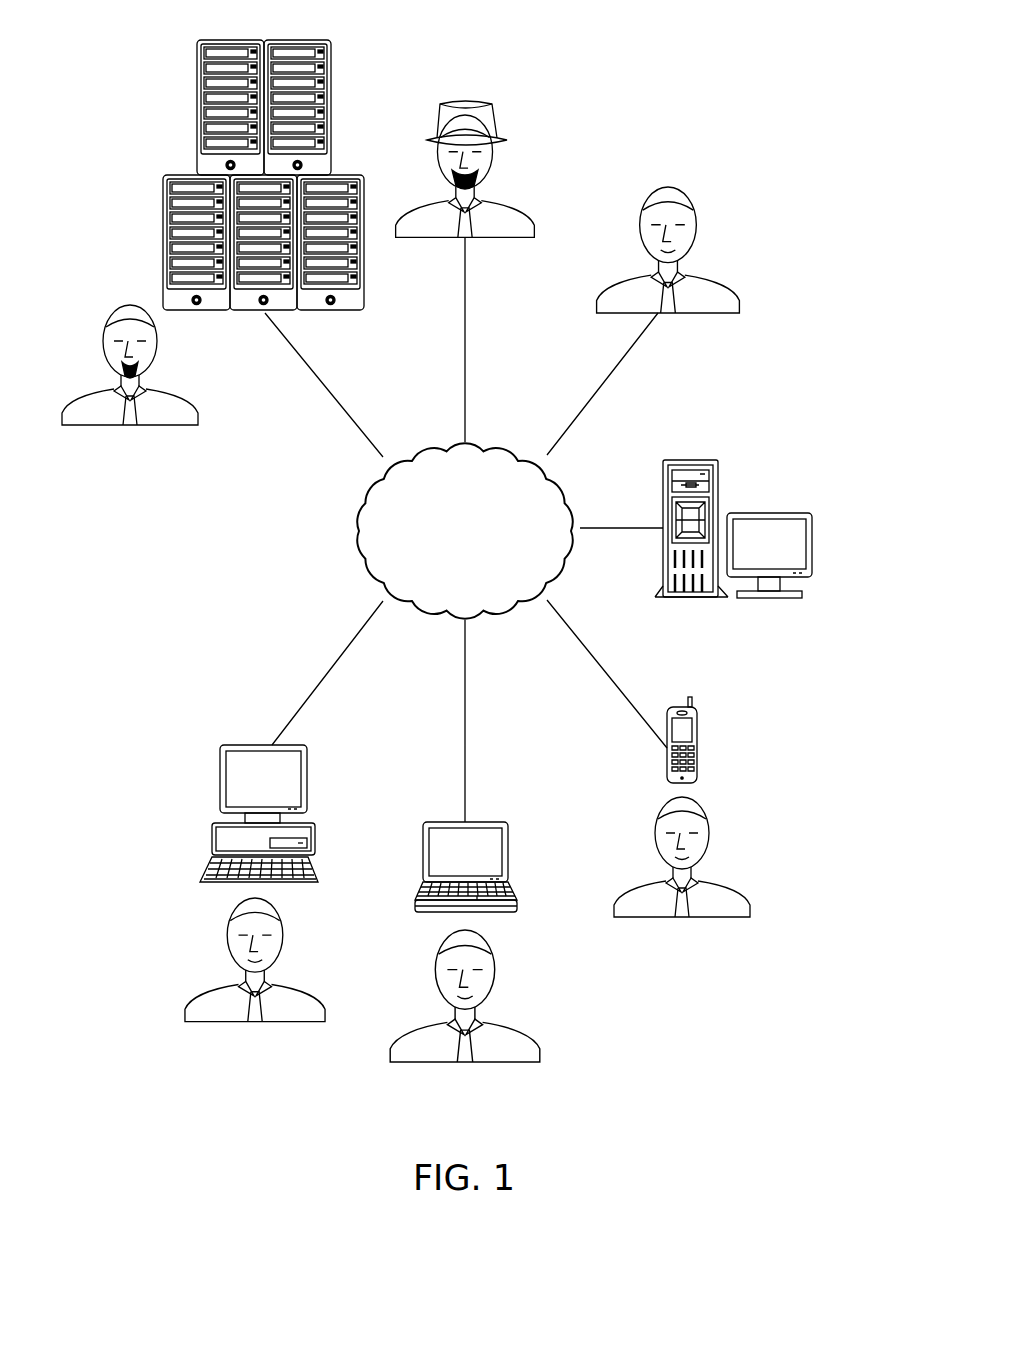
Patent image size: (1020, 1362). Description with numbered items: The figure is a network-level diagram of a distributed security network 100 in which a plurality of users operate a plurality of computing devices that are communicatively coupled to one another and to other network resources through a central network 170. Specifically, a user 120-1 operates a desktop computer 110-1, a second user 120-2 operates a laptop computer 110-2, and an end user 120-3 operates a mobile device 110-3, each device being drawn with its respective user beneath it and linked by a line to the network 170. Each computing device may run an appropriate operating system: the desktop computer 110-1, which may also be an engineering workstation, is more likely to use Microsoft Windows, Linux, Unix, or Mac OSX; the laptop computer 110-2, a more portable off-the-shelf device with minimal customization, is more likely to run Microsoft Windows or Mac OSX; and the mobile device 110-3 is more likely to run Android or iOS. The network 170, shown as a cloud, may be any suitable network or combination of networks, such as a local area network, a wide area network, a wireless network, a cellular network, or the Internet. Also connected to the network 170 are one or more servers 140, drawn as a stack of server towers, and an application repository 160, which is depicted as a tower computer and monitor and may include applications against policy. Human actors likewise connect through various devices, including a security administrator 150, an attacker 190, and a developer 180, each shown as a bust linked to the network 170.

The distributed security network 100 is at (619, 71).
The desktop computer 110-1 is at (212, 840).
The laptop computer 110-2 is at (416, 897).
The mobile device 110-3 is at (697, 748).
The user 120-1 is at (255, 1022).
The user 120-2 is at (465, 1063).
The end user 120-3 is at (684, 917).
The servers 140 is at (190, 98).
The security administrator 150 is at (132, 427).
The application repository 160 is at (772, 512).
The network 170 is at (449, 561).
The developer 180 is at (670, 187).
The attacker 190 is at (462, 102).